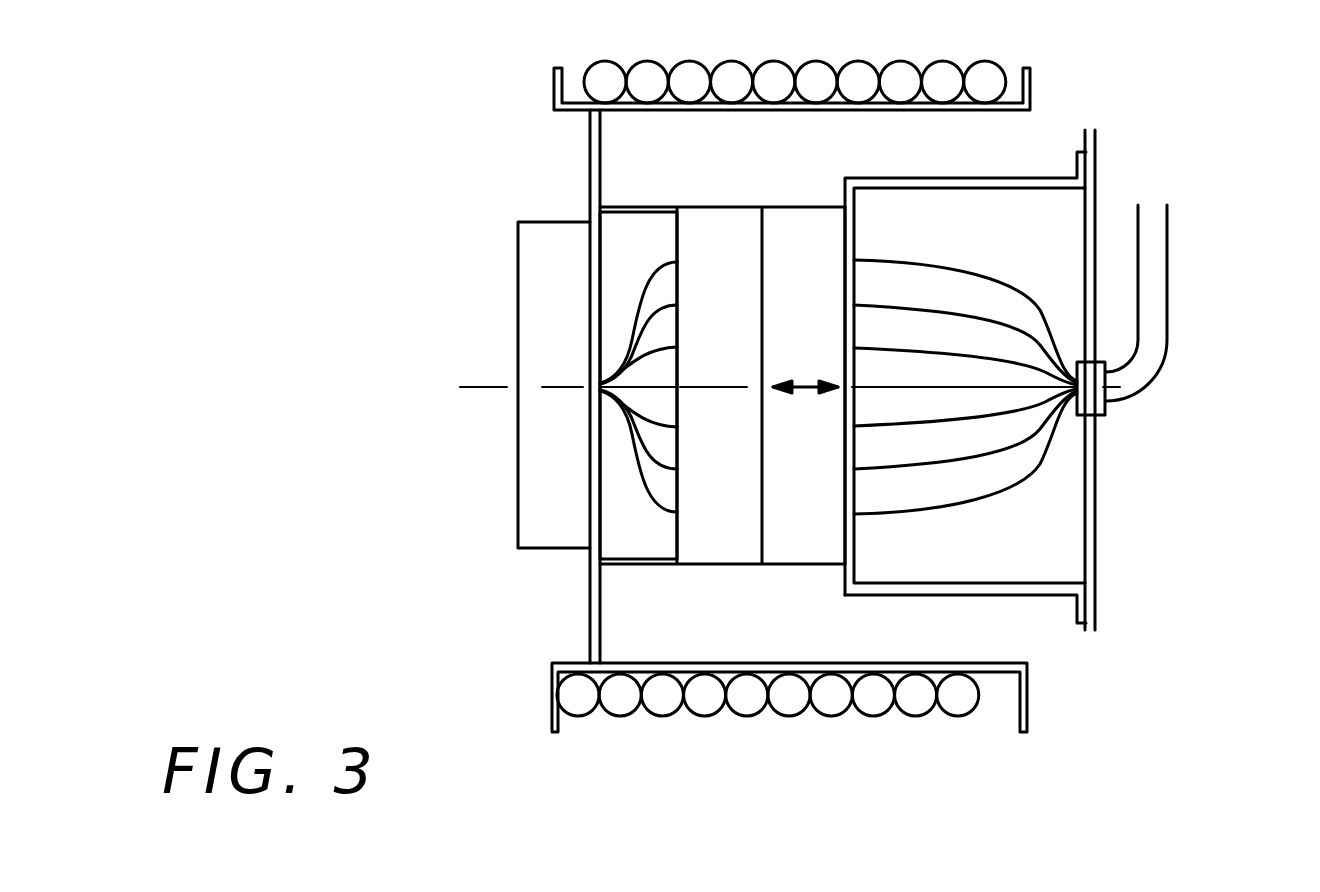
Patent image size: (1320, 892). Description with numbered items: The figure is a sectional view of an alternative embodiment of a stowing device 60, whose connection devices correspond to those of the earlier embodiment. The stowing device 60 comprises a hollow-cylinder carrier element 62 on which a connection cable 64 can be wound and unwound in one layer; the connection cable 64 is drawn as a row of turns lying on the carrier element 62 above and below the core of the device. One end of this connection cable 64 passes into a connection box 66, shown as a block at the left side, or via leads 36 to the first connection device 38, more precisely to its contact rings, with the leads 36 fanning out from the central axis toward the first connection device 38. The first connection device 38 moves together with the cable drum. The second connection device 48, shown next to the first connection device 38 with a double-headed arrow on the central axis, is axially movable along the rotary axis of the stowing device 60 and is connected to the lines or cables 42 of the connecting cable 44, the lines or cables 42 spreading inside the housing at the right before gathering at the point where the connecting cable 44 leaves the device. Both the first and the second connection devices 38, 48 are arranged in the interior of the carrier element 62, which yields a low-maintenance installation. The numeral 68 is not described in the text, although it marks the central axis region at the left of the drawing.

The stowing device 60 is at (485, 176).
The hollow-cylinder carrier element 62 is at (1032, 97).
The connection cable 64 is at (860, 70).
The connection box 66 is at (548, 338).
The central axis 68 is at (488, 387).
The leads 36 is at (638, 482).
The first connection device 38 is at (722, 513).
The second connection device 48 is at (798, 513).
The lines or cables 42 is at (1012, 453).
The connecting cable 44 is at (1135, 371).